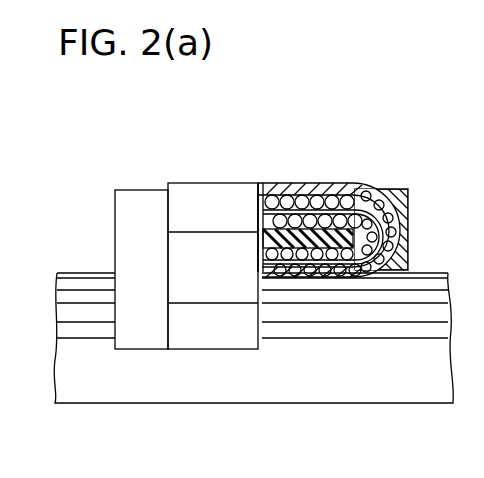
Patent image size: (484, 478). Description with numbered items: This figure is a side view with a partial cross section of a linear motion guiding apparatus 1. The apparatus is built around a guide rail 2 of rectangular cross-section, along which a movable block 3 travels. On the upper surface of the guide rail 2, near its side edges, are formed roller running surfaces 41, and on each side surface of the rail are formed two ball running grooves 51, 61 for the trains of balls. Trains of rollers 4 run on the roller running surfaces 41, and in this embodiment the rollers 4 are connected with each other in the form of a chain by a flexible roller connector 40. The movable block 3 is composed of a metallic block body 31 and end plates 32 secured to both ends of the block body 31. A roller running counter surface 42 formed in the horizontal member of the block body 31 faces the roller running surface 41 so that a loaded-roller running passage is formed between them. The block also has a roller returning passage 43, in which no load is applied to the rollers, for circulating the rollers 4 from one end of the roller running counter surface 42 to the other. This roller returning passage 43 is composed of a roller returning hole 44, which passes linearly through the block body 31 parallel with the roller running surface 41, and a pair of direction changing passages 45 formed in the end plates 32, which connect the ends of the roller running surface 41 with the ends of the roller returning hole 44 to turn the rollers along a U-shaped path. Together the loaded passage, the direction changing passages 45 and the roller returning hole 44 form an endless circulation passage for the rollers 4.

The linear motion guiding apparatus 1 is at (330, 248).
The guide rail 2 is at (153, 390).
The movable block 3 is at (264, 218).
The rollers 4 is at (330, 261).
The block body 31 is at (207, 200).
The end plates 32 is at (125, 215).
The flexible roller connector 40 is at (382, 272).
The roller running surfaces 41 is at (275, 275).
The roller running counter surface 42 is at (257, 190).
The roller returning passage 43 is at (347, 197).
The roller returning hole 44 is at (290, 198).
The direction changing passages 45 is at (374, 198).
The ball running groove 51 is at (89, 296).
The ball running groove 61 is at (90, 330).